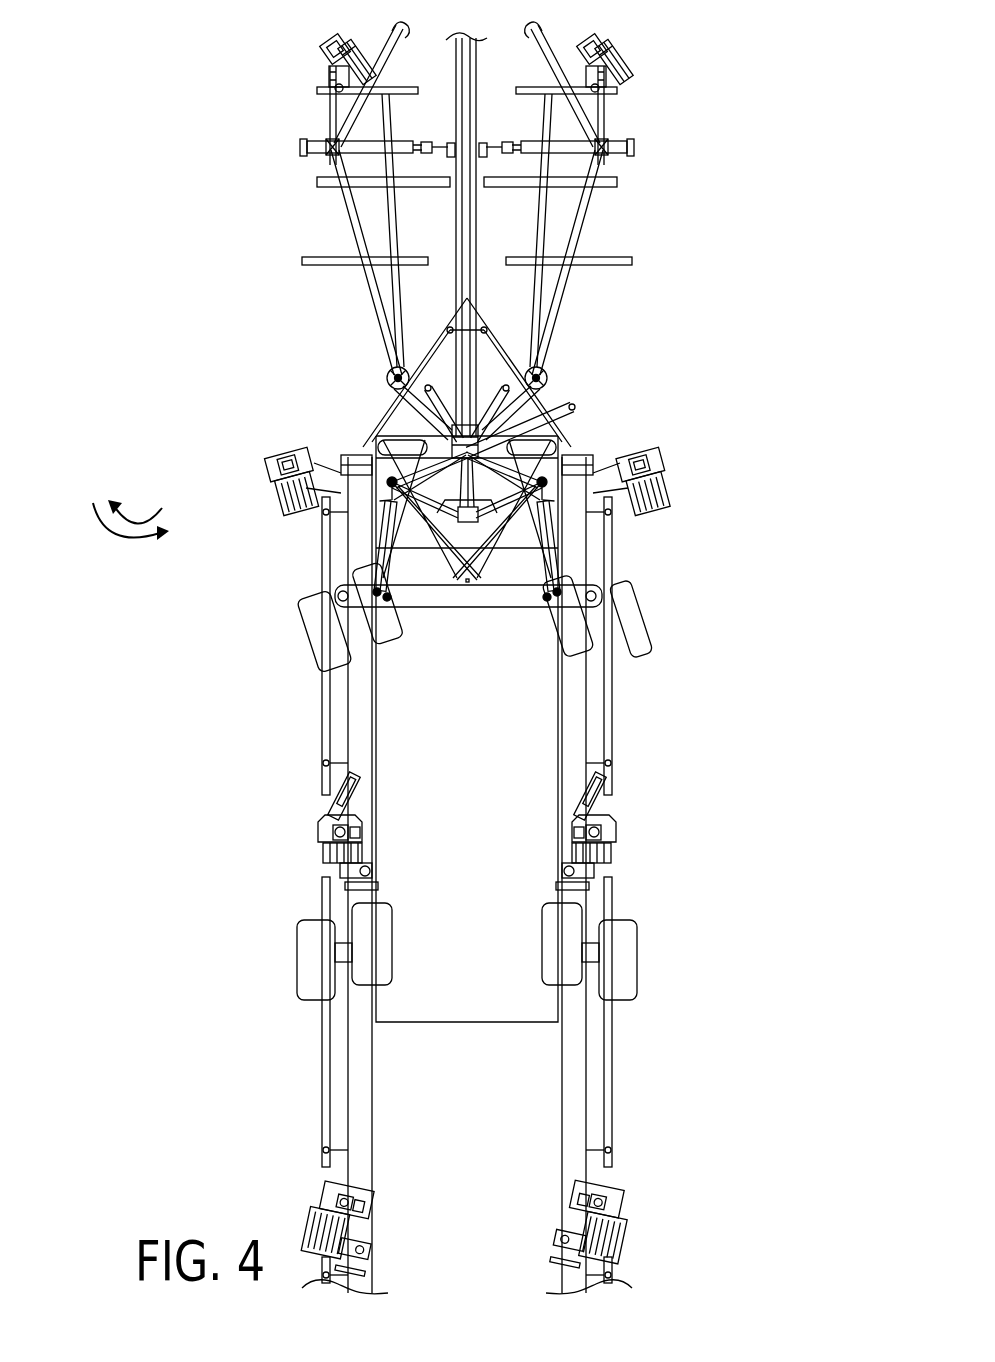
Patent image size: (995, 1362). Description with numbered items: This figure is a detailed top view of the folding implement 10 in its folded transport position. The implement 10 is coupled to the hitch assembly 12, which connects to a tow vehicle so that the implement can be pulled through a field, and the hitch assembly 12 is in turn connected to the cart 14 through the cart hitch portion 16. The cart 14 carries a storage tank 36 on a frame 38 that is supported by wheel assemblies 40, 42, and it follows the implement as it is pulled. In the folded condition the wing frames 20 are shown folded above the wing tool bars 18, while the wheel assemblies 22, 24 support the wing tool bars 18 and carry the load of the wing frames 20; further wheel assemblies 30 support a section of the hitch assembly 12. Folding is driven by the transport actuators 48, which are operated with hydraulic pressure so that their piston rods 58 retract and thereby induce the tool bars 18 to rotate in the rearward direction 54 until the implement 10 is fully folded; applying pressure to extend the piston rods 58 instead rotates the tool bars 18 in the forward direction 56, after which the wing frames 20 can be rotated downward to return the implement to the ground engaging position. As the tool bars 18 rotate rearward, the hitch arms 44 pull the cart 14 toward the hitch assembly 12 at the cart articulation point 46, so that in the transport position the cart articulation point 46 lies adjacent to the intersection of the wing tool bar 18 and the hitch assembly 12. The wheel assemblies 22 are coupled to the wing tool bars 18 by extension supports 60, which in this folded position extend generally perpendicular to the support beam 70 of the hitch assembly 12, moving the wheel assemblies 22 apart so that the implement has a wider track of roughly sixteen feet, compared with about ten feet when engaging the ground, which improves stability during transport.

The implement 10 is at (744, 658).
The hitch assembly 12 is at (678, 179).
The cart 14 is at (437, 1060).
The cart hitch portion 16 is at (648, 407).
The wing tool bars 18 is at (523, 452).
The wing frames 20 is at (325, 752).
The wheel assemblies 22 is at (290, 506).
The wheel assemblies 24 is at (320, 870).
The wheel assemblies 30 is at (337, 40).
The storage tank 36 is at (453, 1008).
The frame 38 is at (465, 607).
The wheel assemblies 40 is at (318, 652).
The wheel assemblies 42 is at (297, 962).
The hitch arms 44 is at (403, 415).
The cart articulation point 46 is at (493, 573).
The transport actuators 48 is at (413, 573).
The rearward direction 54 is at (110, 535).
The forward direction 56 is at (143, 517).
The piston rods 58 is at (388, 506).
The extension supports 60 is at (329, 465).
The support beam 70 is at (469, 77).